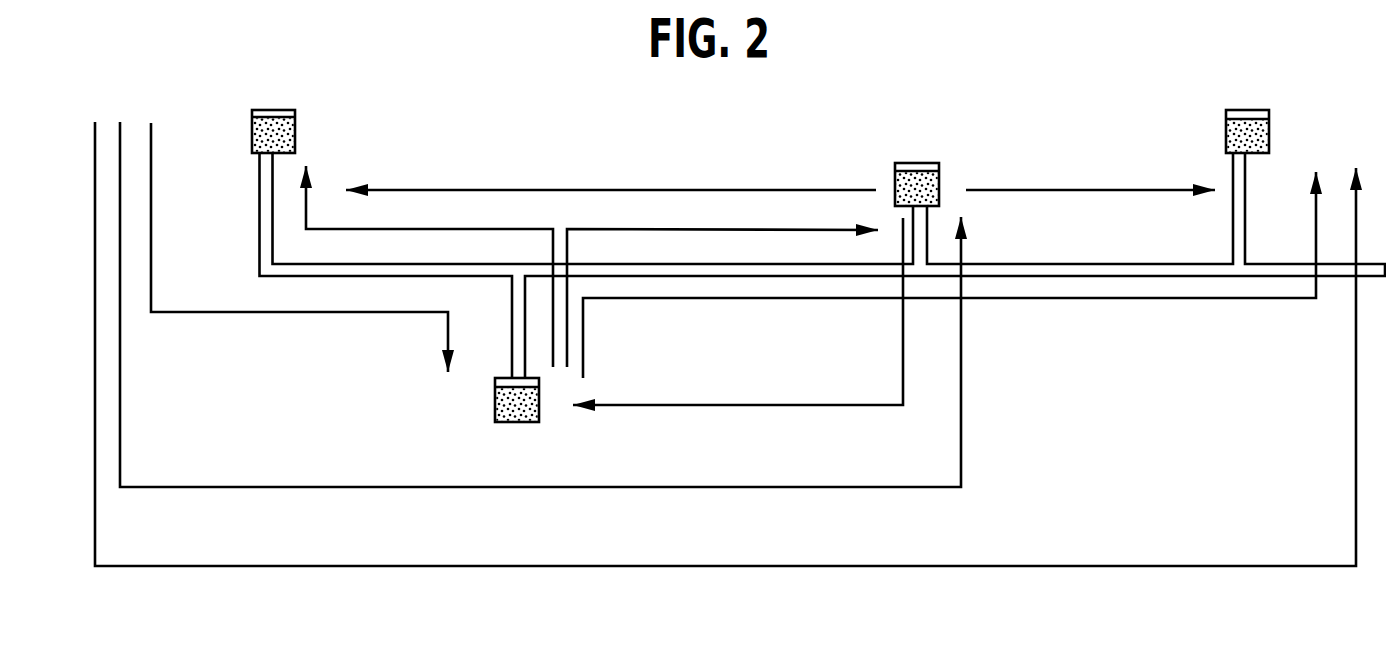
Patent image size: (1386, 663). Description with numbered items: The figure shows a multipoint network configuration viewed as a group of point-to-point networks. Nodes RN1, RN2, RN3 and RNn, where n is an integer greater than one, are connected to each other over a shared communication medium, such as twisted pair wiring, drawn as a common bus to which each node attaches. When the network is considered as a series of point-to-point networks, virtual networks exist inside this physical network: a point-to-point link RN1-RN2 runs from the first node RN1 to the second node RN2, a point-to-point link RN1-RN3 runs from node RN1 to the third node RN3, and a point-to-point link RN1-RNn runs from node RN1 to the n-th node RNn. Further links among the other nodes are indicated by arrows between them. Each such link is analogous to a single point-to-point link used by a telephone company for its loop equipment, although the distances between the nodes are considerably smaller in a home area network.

The node RN1 is at (275, 110).
The node RN2 is at (518, 420).
The node RN3 is at (919, 167).
The node RNn is at (1249, 110).
The point-to-point link RN1-RN2 is at (299, 247).
The point-to-point link RN1-RN3 is at (540, 304).
The point-to-point link RN1-RNn is at (725, 344).